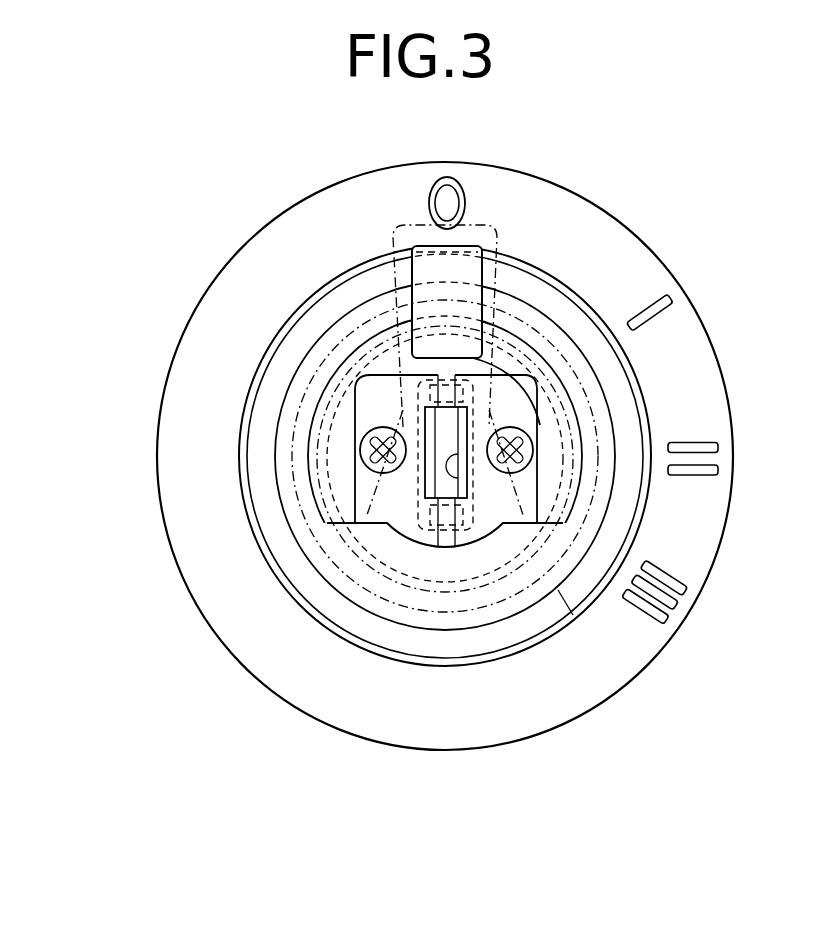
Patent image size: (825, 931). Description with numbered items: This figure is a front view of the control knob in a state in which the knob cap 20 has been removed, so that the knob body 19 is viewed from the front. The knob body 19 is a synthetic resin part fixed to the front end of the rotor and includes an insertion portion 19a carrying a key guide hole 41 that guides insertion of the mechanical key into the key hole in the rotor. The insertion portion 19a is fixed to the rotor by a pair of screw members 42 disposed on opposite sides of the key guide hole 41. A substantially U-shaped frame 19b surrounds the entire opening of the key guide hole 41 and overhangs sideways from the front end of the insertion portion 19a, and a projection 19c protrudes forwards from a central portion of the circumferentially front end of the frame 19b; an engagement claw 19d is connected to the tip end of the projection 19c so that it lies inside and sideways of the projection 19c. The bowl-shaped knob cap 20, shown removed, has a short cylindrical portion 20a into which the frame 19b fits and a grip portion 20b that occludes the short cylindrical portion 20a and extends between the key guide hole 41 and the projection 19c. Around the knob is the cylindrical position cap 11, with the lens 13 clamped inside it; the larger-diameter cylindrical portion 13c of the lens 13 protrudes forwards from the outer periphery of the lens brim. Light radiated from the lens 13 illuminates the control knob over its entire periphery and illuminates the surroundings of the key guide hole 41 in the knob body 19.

The position cap 11 is at (702, 522).
The lens 13 is at (387, 672).
The larger-diameter cylindrical portion 13c is at (453, 655).
The knob body 19 is at (552, 355).
The insertion portion 19a is at (407, 530).
The frame 19b is at (342, 358).
The projection 19c is at (457, 270).
The engagement claw 19d is at (483, 372).
The knob cap 20 is at (594, 399).
The short cylindrical portion 20a is at (563, 606).
The grip portion 20b is at (403, 405).
The key guide hole 41 is at (467, 495).
The screw members 42 is at (360, 458).